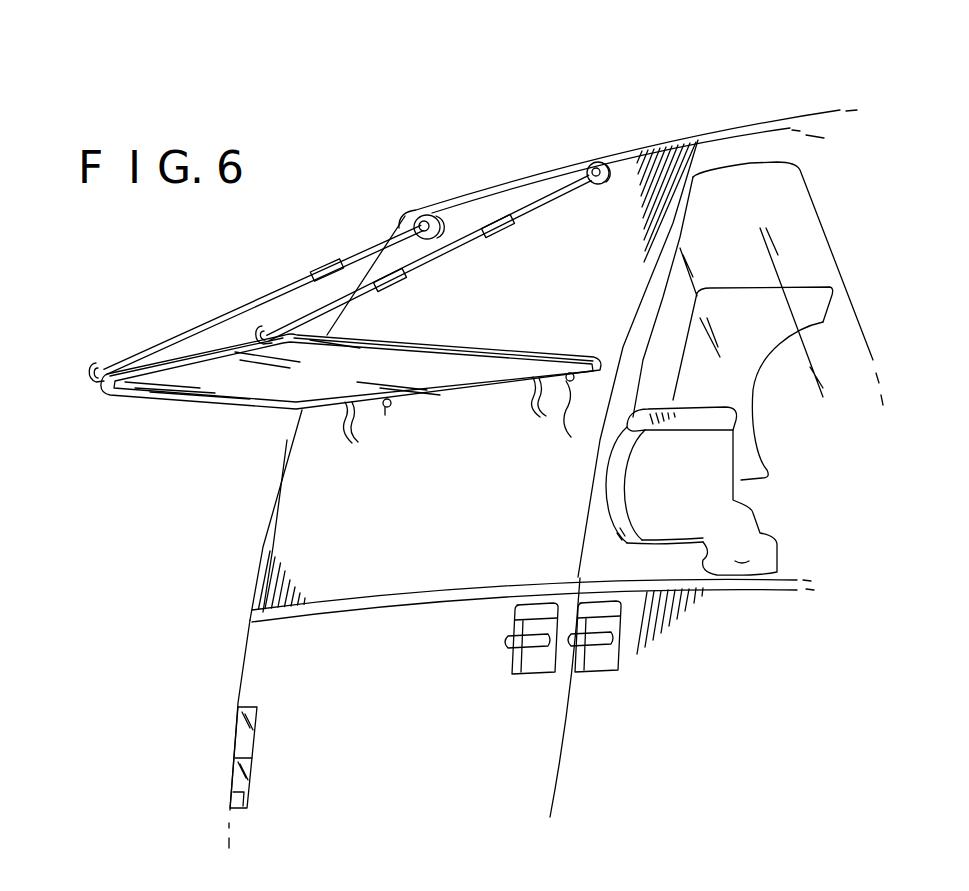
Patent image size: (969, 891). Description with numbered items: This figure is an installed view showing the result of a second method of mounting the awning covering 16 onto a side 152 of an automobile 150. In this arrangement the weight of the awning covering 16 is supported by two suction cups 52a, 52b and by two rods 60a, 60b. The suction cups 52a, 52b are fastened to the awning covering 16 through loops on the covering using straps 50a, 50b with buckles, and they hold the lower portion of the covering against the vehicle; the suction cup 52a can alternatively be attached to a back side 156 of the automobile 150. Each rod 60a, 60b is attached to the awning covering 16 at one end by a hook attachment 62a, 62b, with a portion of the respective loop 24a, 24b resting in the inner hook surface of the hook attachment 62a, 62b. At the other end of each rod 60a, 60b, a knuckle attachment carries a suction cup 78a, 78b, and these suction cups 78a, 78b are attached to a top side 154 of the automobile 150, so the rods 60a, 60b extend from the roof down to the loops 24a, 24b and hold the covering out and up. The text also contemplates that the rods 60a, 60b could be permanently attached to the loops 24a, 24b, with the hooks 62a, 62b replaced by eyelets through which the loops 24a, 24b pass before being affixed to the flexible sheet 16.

The awning covering 16 is at (176, 420).
The loop 24a is at (107, 363).
The loop 24b is at (272, 328).
The strap 50a is at (330, 440).
The strap 50b is at (533, 406).
The suction cup 52a is at (387, 410).
The suction cup 52b is at (560, 385).
The rod 60a is at (322, 250).
The rod 60b is at (445, 274).
The hook attachment 62a is at (90, 377).
The hook attachment 62b is at (263, 331).
The suction cup 78a is at (430, 214).
The suction cup 78b is at (600, 161).
The automobile 150 is at (228, 603).
The side 152 is at (313, 503).
The top side 154 is at (820, 112).
The back side 156 is at (276, 477).